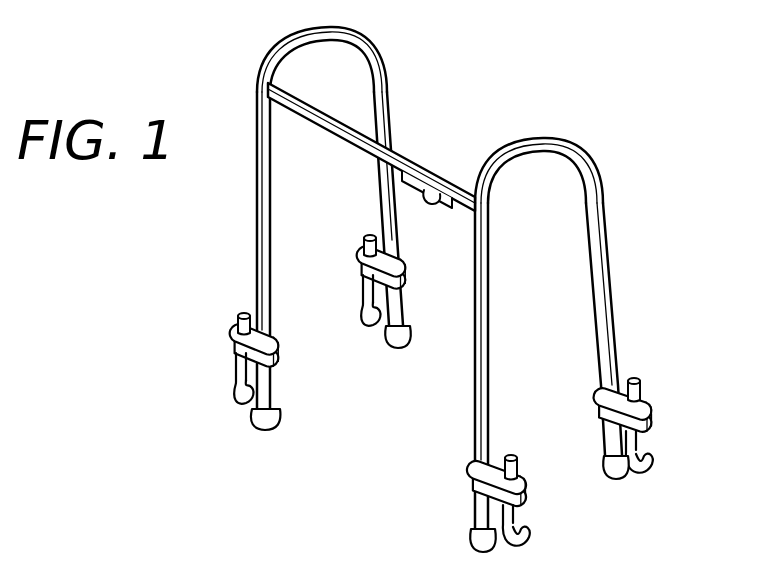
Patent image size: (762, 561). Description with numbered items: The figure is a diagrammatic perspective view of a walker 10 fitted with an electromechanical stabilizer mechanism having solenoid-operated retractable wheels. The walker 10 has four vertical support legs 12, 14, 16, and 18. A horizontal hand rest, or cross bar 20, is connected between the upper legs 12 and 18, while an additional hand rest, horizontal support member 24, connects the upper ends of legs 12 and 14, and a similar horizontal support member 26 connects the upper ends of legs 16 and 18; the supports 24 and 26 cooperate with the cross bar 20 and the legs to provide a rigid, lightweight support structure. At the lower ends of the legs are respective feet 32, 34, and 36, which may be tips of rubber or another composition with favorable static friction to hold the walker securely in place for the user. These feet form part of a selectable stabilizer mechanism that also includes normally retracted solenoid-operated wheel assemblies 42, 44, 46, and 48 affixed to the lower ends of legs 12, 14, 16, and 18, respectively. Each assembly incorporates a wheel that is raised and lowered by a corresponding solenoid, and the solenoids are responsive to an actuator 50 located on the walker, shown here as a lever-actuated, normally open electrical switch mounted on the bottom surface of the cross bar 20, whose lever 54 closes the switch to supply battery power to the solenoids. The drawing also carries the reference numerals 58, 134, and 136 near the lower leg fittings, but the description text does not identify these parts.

The walker 10 is at (560, 90).
The vertical support leg 12 is at (257, 244).
The vertical support leg 14 is at (377, 190).
The vertical support leg 16 is at (606, 252).
The vertical support leg 18 is at (488, 358).
The cross bar 20 is at (350, 133).
The horizontal support member 24 is at (287, 40).
The horizontal support member 26 is at (518, 152).
The foot 32 is at (262, 433).
The foot 34 is at (397, 349).
The foot 36 is at (618, 482).
The solenoid operated wheel assembly 42 is at (220, 332).
The solenoid operated wheel assembly 44 is at (413, 278).
The solenoid operated wheel assembly 46 is at (653, 400).
The solenoid operated wheel assembly 48 is at (460, 478).
The actuator 50 is at (418, 205).
The lever 54 is at (446, 182).
The foot 58 is at (405, 545).
The U-bolt 134 is at (234, 358).
The hook 136 is at (240, 403).